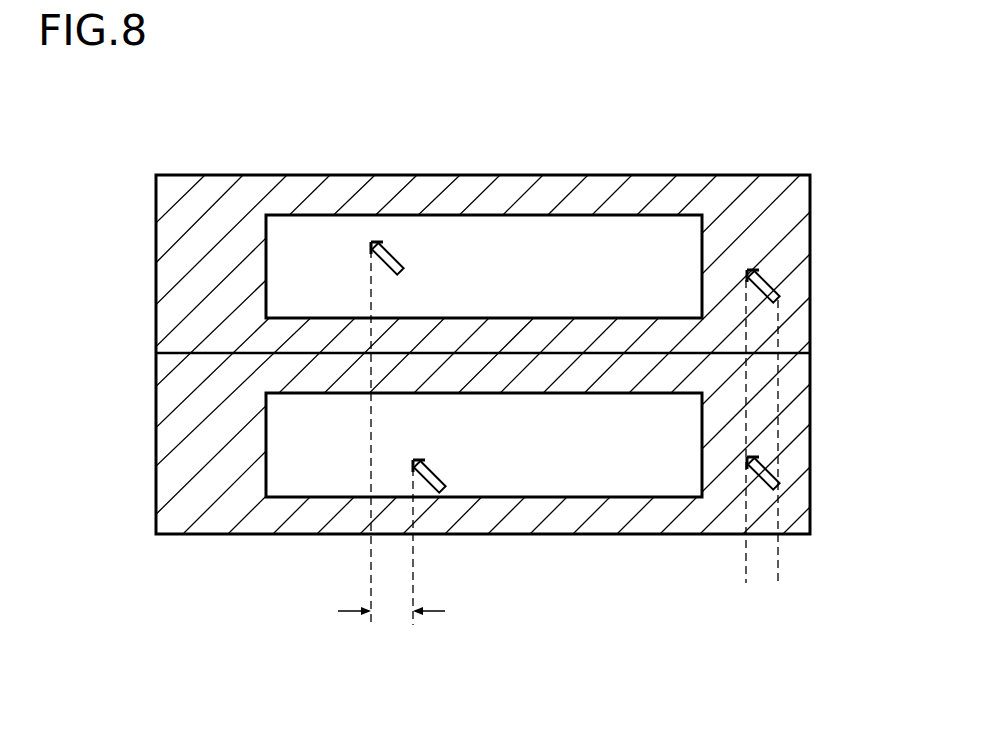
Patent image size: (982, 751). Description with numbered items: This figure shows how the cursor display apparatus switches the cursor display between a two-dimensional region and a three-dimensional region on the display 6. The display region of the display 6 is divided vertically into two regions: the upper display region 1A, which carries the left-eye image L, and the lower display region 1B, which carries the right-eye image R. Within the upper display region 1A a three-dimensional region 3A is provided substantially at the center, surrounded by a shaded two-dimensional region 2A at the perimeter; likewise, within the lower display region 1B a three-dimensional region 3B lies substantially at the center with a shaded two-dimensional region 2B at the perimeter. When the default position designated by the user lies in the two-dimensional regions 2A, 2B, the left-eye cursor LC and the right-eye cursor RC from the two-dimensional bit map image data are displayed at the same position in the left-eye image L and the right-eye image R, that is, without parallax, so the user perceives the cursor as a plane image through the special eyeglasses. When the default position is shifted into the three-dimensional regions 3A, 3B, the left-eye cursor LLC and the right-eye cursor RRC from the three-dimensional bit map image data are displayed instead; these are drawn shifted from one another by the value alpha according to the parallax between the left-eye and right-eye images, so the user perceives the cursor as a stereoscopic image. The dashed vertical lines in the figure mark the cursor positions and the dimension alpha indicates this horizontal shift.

The upper display region 1A is at (203, 175).
The lower display region 1B is at (201, 534).
The 2D region 2A is at (178, 272).
The 2D region 2B is at (178, 454).
The 3D region 3A is at (457, 216).
The 3D region 3B is at (517, 490).
The display 6 is at (712, 135).
The left-eye cursor LLC is at (398, 262).
The right-eye cursor RRC is at (420, 456).
The left-eye cursor LC is at (777, 290).
The right-eye cursor RC is at (773, 477).